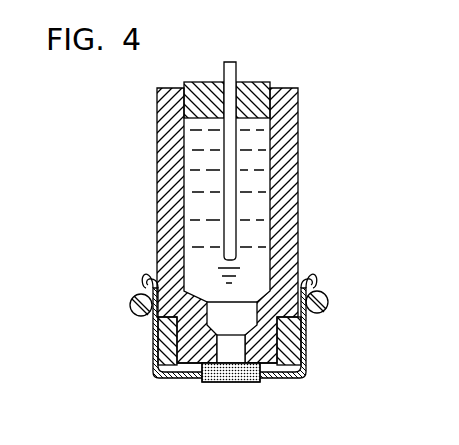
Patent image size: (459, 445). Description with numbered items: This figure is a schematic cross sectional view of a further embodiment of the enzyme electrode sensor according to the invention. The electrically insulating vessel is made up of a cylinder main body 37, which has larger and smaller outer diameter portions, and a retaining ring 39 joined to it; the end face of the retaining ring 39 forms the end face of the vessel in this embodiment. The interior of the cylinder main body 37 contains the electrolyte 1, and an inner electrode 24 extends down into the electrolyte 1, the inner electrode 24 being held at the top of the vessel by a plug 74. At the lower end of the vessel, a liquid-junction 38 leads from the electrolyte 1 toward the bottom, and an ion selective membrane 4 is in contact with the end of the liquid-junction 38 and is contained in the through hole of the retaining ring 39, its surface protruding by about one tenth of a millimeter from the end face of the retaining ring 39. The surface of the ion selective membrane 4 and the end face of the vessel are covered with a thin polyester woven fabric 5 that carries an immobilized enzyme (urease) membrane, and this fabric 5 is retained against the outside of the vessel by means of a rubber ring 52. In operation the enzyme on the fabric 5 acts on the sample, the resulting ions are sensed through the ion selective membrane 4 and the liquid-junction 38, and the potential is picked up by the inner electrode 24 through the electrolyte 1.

The electrolyte 1 is at (255, 238).
The ion selective membrane 4 is at (246, 377).
The thin polyester woven fabric 5 is at (283, 378).
The inner electrode 24 is at (237, 204).
The cylinder main body 37 is at (157, 150).
The liquid-junction 38 is at (228, 350).
The retaining ring 39 is at (158, 344).
The rubber ring 52 is at (328, 298).
The plug 74 is at (248, 82).